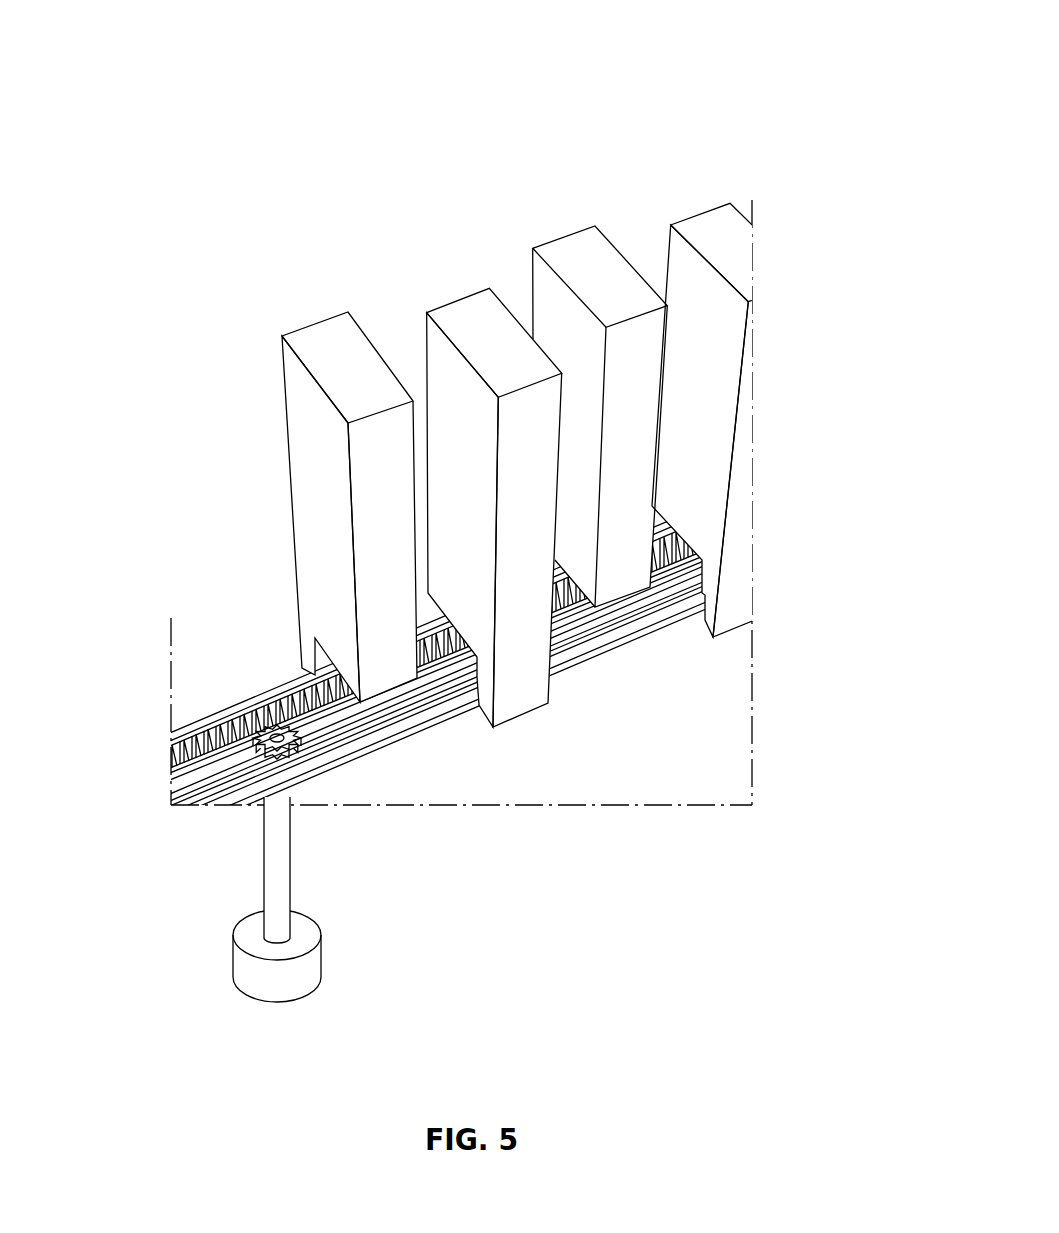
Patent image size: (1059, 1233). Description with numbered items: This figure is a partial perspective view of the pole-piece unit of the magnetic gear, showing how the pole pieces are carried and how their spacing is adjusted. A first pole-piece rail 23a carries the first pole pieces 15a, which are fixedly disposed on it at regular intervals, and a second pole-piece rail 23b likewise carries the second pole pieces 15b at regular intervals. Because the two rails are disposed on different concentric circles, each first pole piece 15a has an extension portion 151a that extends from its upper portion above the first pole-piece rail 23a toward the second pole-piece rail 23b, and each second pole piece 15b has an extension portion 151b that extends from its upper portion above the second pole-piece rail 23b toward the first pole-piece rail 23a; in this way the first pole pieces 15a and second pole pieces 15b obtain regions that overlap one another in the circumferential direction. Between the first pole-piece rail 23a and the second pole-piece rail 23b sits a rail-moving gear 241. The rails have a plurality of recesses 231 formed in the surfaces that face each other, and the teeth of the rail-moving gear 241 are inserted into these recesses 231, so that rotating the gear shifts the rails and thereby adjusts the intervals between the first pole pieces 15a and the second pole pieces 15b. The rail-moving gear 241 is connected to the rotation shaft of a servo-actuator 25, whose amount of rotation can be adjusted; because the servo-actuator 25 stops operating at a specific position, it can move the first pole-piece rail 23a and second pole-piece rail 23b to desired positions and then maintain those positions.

The first pole pieces 15a is at (455, 287).
The second pole pieces 15b is at (313, 318).
The extension portion 151a is at (438, 350).
The extension portion 151b is at (617, 553).
The first pole-piece rail 23a is at (336, 752).
The second pole-piece rail 23b is at (267, 733).
The recesses 231 is at (213, 765).
The rail-moving gear 241 is at (222, 775).
The servo-actuator 25 is at (283, 988).